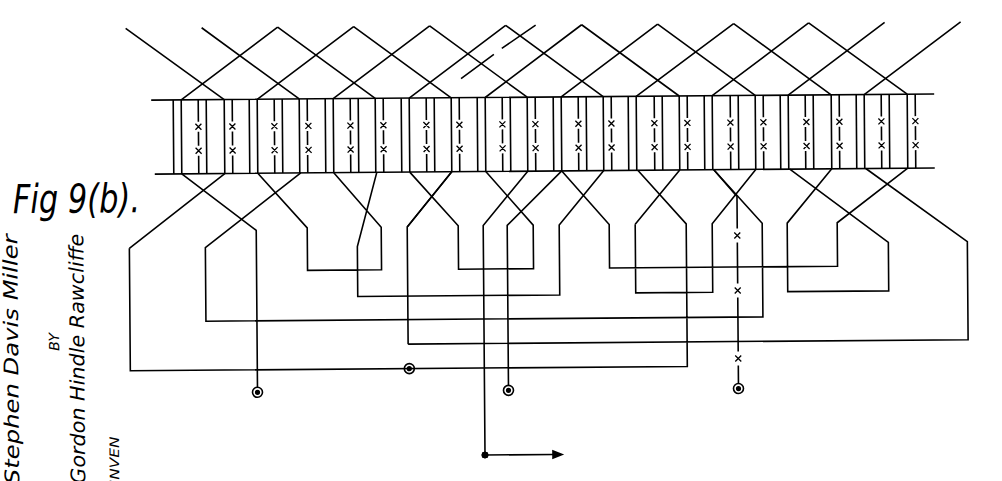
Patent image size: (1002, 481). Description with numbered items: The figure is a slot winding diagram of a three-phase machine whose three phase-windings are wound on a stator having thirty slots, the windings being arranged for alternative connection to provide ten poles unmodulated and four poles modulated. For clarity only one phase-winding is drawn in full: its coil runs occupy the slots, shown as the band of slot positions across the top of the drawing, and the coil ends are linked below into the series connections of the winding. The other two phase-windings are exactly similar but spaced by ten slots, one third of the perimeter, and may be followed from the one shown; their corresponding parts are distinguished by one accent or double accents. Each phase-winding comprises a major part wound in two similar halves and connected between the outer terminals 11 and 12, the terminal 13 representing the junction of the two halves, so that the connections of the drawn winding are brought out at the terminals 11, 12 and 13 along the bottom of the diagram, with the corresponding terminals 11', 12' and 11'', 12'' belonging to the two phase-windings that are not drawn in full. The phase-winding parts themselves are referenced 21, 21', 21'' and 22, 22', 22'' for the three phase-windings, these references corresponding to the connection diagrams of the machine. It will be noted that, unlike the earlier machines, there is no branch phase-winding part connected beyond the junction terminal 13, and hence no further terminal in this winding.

The outer terminal 11 is at (222, 288).
The outer terminal 11' is at (755, 283).
The outer terminal 11'' is at (538, 286).
The outer terminal 12 is at (449, 314).
The outer terminal 12' is at (429, 445).
The outer terminal 12'' is at (429, 445).
The terminal 13 is at (403, 374).
The first coil group 21 is at (252, 137).
The second coil group 21' is at (594, 125).
The third coil group 21'' is at (376, 126).
The coil group connection 22 is at (472, 220).
The coil group connection 22' is at (563, 447).
The coil group connection 22'' is at (597, 447).